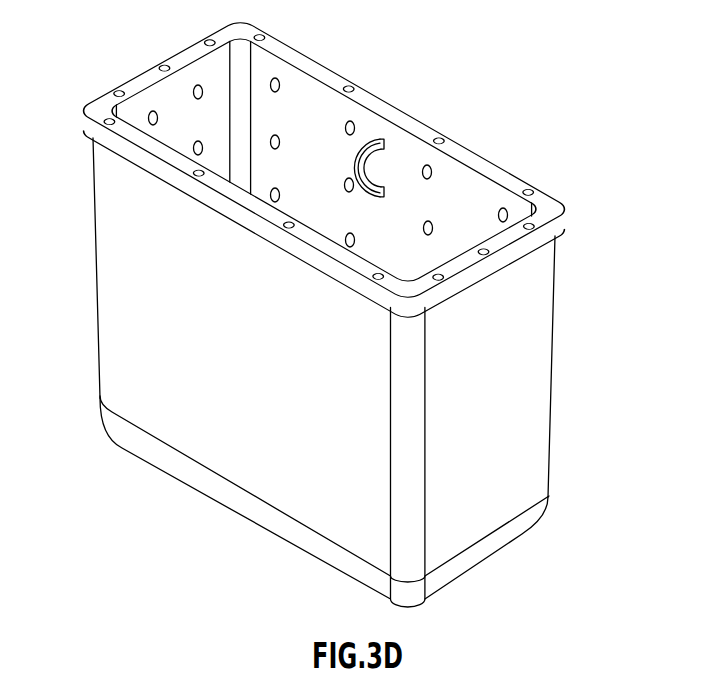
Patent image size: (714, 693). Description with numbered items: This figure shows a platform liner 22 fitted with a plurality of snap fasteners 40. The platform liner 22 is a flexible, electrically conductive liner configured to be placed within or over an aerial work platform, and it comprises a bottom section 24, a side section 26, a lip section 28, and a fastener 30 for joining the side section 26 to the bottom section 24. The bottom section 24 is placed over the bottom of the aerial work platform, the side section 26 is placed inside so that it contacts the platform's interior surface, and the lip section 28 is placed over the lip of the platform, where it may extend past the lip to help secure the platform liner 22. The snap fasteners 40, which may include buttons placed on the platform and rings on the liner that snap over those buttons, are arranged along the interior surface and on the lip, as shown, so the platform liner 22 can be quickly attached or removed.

The platform liner 22 is at (569, 142).
The bottom section 24 is at (460, 584).
The side section 26 is at (556, 312).
The lip section 28 is at (103, 103).
The fastener 30 is at (532, 495).
The snap fasteners 40 is at (211, 37).